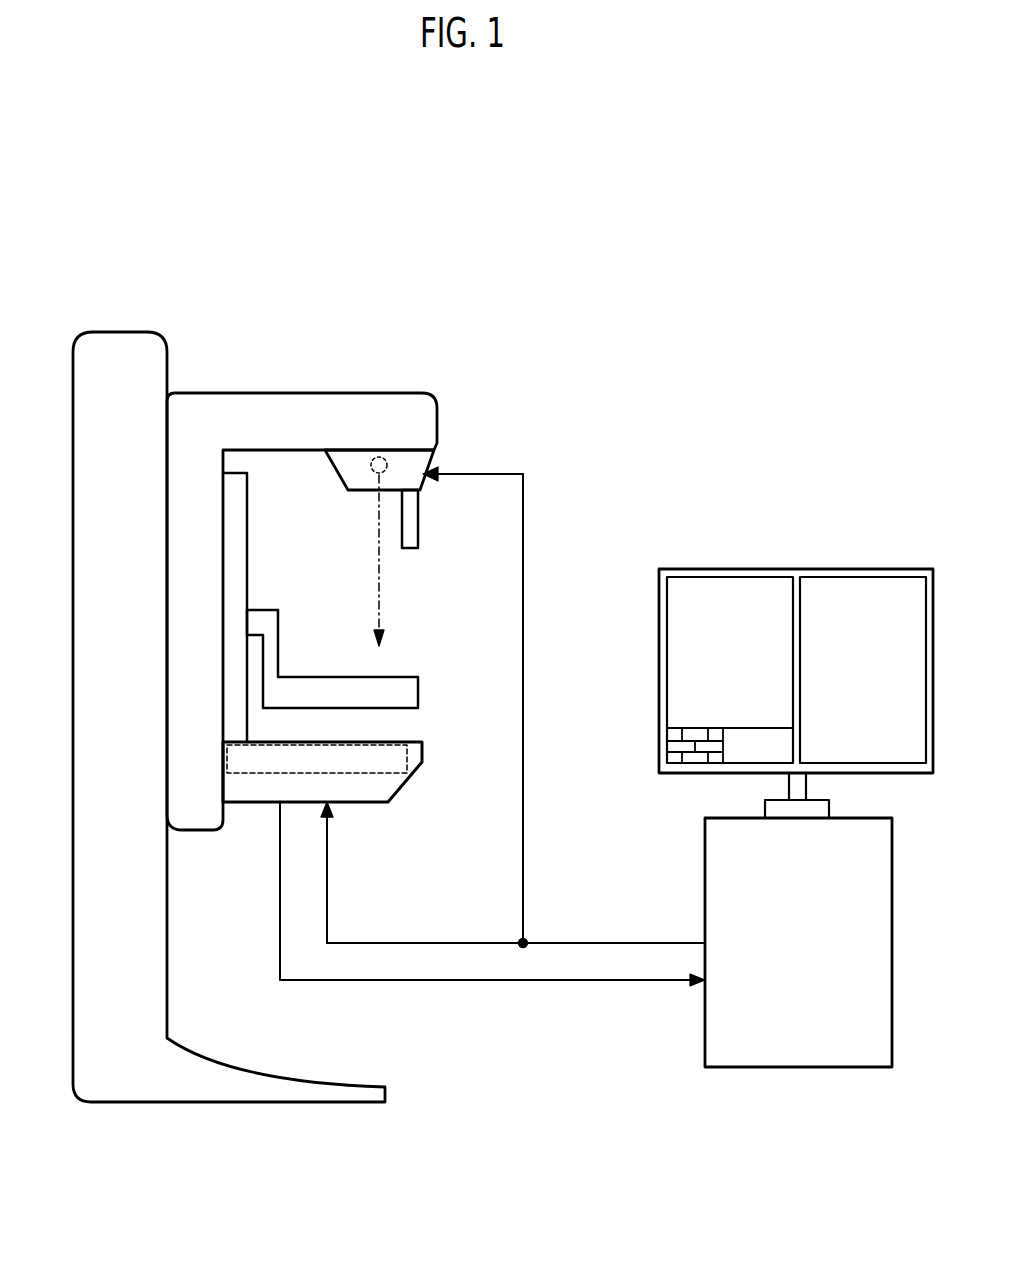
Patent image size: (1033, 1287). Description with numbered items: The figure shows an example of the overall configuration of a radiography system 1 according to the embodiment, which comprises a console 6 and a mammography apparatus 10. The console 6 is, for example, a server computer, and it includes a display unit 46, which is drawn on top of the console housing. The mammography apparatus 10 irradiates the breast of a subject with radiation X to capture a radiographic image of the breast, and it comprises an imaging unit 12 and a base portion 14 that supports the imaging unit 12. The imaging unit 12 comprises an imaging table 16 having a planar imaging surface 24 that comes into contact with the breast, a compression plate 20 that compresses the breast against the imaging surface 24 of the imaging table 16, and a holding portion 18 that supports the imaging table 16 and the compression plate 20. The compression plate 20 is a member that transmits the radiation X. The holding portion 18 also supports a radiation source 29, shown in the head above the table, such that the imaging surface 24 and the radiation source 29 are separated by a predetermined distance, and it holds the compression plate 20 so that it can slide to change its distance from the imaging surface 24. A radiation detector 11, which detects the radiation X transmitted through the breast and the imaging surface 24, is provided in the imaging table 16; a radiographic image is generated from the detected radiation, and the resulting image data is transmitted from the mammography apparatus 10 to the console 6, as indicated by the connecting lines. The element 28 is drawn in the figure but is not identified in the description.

The radiography system 1 is at (811, 1185).
The mammography apparatus 10 is at (256, 290).
The base portion 14 is at (72, 484).
The imaging unit 12 is at (197, 392).
The radiation source 28 is at (328, 469).
The radiation source 29 is at (387, 463).
The holding portion 18 is at (243, 553).
The compression plate 20 is at (318, 677).
The imaging table 16 is at (372, 807).
The imaging surface 24 is at (410, 736).
The radiation detector 11 is at (255, 773).
The console 6 is at (806, 540).
The display unit 46 is at (898, 568).